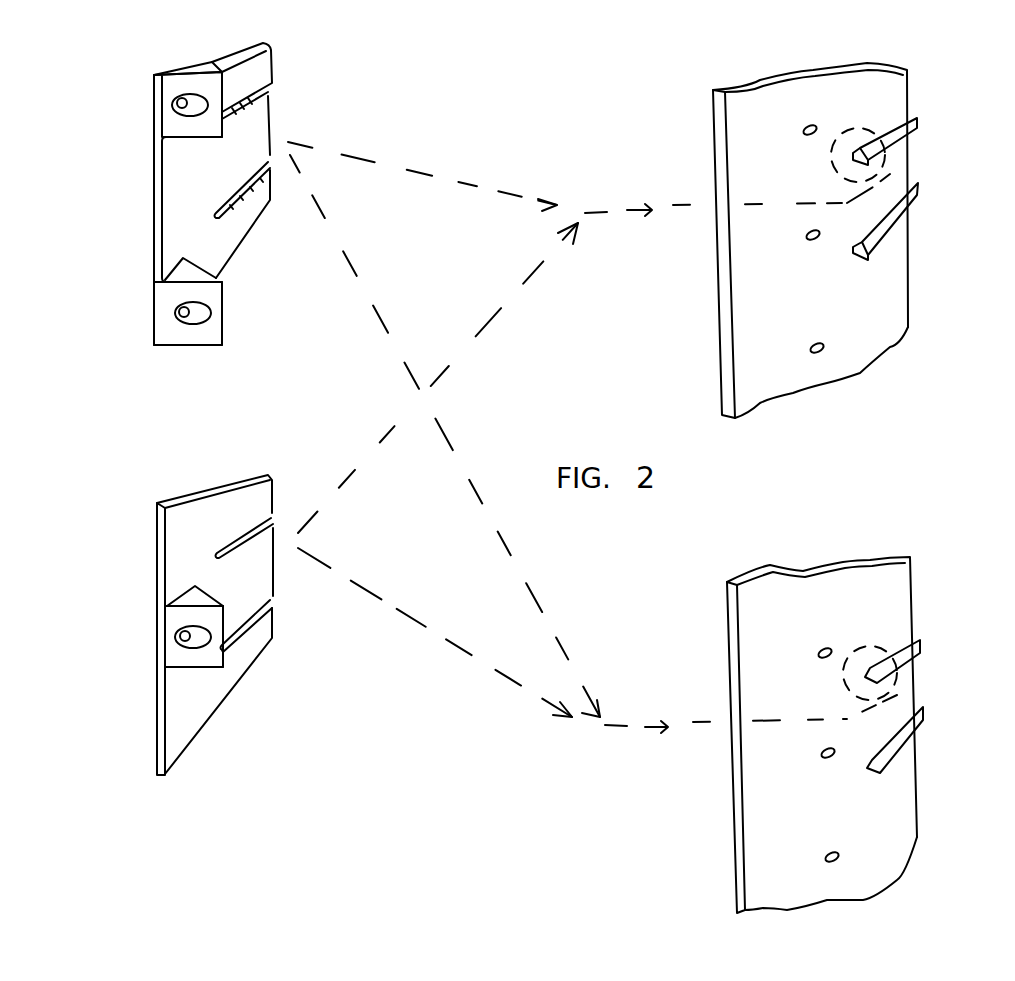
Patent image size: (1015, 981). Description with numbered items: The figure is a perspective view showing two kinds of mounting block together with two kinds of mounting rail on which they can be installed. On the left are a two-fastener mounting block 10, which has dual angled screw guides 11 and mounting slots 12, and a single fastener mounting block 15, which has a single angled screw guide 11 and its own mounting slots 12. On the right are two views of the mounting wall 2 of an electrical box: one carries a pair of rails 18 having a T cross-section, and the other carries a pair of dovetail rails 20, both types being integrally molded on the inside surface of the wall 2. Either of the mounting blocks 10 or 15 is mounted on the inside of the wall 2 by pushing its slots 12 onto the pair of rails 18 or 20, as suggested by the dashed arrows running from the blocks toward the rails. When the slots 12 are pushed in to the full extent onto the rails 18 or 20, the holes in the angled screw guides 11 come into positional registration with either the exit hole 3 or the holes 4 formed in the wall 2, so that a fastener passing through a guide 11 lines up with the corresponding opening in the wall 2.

The mounting wall 2 is at (770, 88).
The exit hole 3 is at (895, 113).
The holes 4 is at (808, 122).
The two-fastener mounting block 10 is at (123, 137).
The angled screw guide 11 is at (198, 87).
The mounting slots 12 is at (275, 92).
The single fastener mounting block 15 is at (140, 542).
The T crossection rails 18 is at (903, 140).
The dovetail rails 20 is at (917, 645).